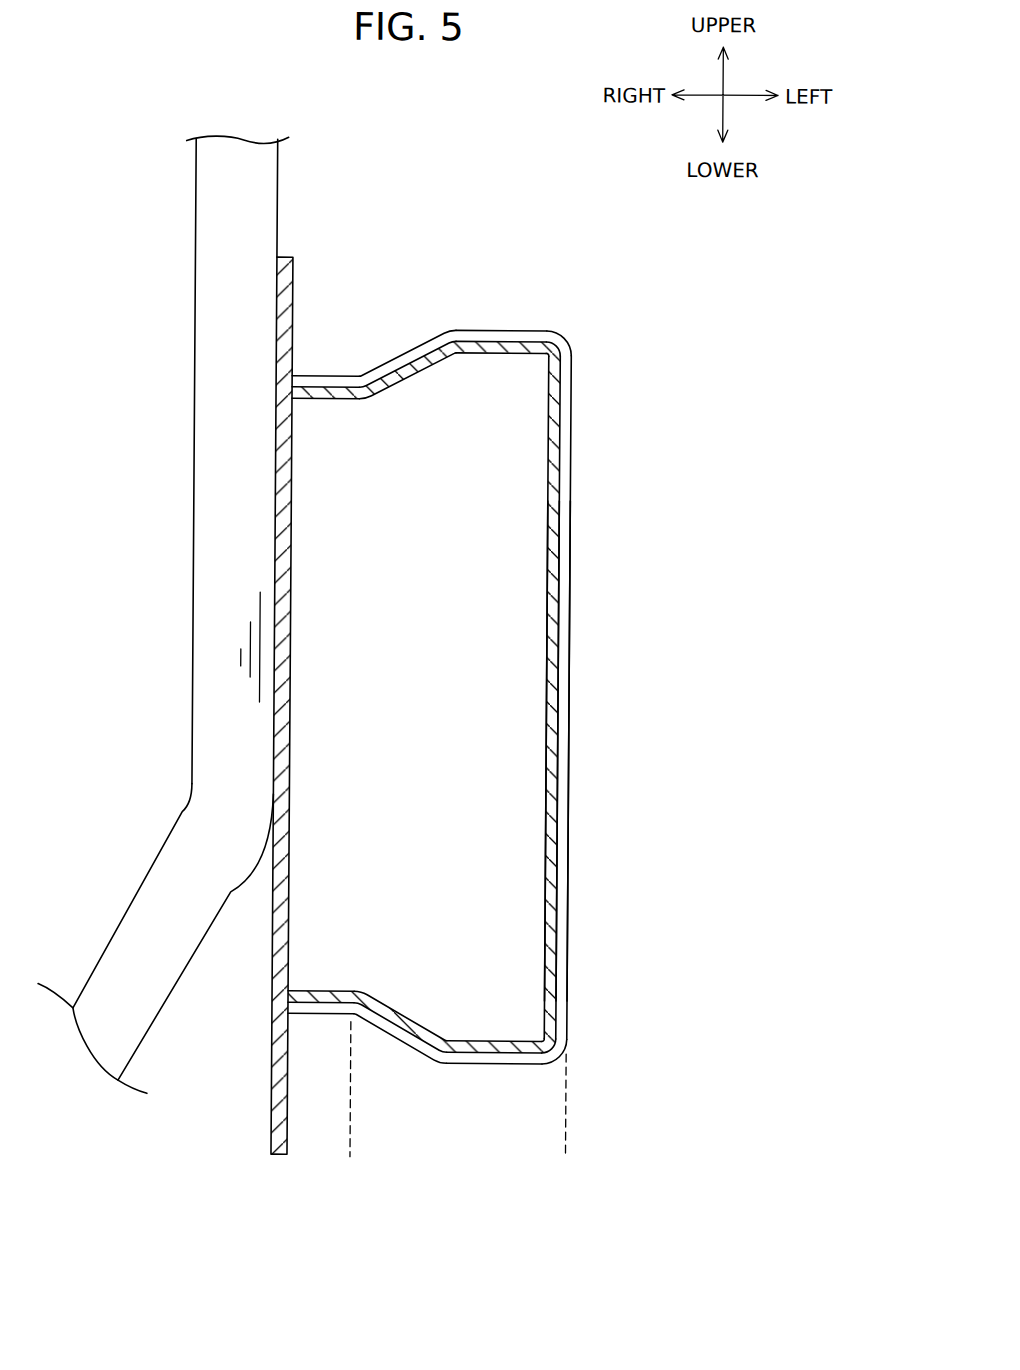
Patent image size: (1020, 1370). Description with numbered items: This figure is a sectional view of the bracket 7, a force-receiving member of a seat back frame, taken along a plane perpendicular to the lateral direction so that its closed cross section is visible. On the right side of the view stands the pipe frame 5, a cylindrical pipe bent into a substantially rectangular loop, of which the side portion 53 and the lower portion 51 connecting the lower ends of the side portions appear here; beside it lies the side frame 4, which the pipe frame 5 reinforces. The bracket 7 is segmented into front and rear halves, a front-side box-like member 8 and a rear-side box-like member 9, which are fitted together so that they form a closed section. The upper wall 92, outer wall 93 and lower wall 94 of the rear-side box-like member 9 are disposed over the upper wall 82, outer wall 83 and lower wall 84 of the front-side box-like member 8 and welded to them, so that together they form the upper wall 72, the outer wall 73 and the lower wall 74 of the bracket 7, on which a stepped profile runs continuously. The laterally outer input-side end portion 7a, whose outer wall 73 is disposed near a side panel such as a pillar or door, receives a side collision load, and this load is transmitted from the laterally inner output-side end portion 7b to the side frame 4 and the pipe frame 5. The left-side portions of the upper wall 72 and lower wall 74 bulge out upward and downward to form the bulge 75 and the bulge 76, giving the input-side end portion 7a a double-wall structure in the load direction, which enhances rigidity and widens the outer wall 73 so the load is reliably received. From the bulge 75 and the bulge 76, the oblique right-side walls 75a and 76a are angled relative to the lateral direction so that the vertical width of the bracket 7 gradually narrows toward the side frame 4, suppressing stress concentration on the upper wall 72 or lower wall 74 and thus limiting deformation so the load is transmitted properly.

The pipe frame 5 is at (193, 615).
The side portion 53 is at (201, 325).
The lower portion 51 is at (163, 896).
The side frame 4 is at (303, 294).
The bracket 7 is at (493, 717).
The input-side end portion 7a is at (516, 720).
The output-side end portion 7b is at (350, 1168).
The front-side box-like member 8 is at (572, 502).
The rear-side box-like member 9 is at (582, 558).
The upper wall 72 is at (497, 288).
The upper wall 82 is at (474, 347).
The upper wall 92 is at (444, 270).
The outer wall 73 is at (621, 698).
The outer wall 83 is at (552, 723).
The outer wall 93 is at (564, 686).
The lower wall 74 is at (484, 1101).
The lower wall 84 is at (460, 1047).
The lower wall 94 is at (430, 1112).
The bulge 75 is at (580, 328).
The right-side wall of bulge 75a is at (392, 357).
The bulge 76 is at (582, 992).
The right-side wall of bulge 76a is at (400, 1055).